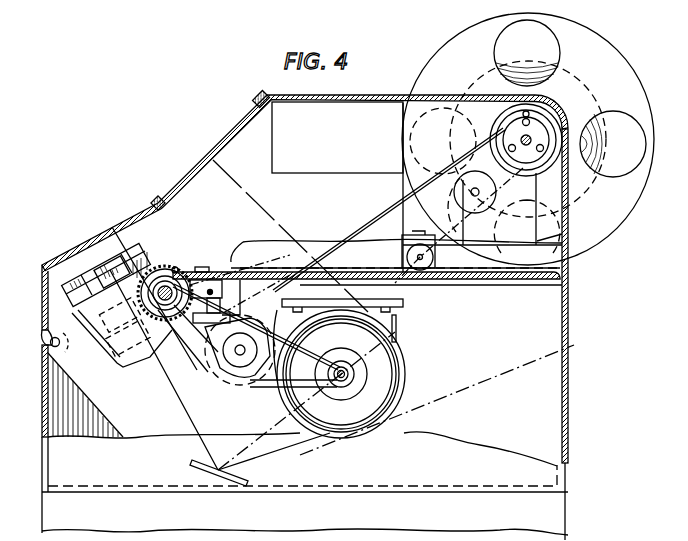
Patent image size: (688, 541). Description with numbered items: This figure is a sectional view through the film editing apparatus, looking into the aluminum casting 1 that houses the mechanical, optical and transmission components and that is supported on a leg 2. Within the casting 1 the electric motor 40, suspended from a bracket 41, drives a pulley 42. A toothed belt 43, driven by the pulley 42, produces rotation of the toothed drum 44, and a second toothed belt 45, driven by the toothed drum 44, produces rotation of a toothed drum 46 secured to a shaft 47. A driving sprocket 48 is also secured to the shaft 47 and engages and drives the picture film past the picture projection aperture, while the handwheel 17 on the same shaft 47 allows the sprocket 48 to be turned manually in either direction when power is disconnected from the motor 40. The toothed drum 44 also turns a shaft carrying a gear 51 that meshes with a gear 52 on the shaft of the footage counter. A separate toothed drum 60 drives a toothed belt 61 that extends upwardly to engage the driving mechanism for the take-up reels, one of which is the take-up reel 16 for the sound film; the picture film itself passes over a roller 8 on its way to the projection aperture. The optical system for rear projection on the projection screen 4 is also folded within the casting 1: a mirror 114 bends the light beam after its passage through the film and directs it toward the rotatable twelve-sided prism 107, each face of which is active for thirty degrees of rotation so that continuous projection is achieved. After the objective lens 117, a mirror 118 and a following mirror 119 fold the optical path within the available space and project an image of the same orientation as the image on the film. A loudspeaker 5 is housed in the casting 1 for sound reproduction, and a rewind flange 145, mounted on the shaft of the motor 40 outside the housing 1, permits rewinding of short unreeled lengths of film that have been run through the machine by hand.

The aluminum casting 1 is at (566, 462).
The leg 2 is at (543, 523).
The projection screen 4 is at (228, 139).
The loudspeaker 5 is at (334, 167).
The roller 8 is at (48, 345).
The take-up reel 16 is at (626, 82).
The handwheel 17 is at (166, 268).
The electric motor 40 is at (395, 397).
The bracket 41 is at (405, 295).
The pulley 42 is at (330, 372).
The toothed belt 43 is at (329, 361).
The toothed drum 44 is at (250, 374).
The toothed belt 45 is at (209, 362).
The toothed drum 46 is at (177, 268).
The shaft 47 is at (205, 268).
The driving sprocket 48 is at (190, 345).
The gear 51 is at (236, 289).
The gear 52 is at (230, 372).
The toothed drum 60 is at (461, 199).
The toothed belt 61 is at (396, 205).
The twelve-sided prism 107 is at (126, 270).
The mirror 114 is at (100, 249).
The objective lens 117 is at (128, 368).
The mirror 118 is at (190, 471).
The mirror 119 is at (398, 324).
The rewind flange 145 is at (409, 419).